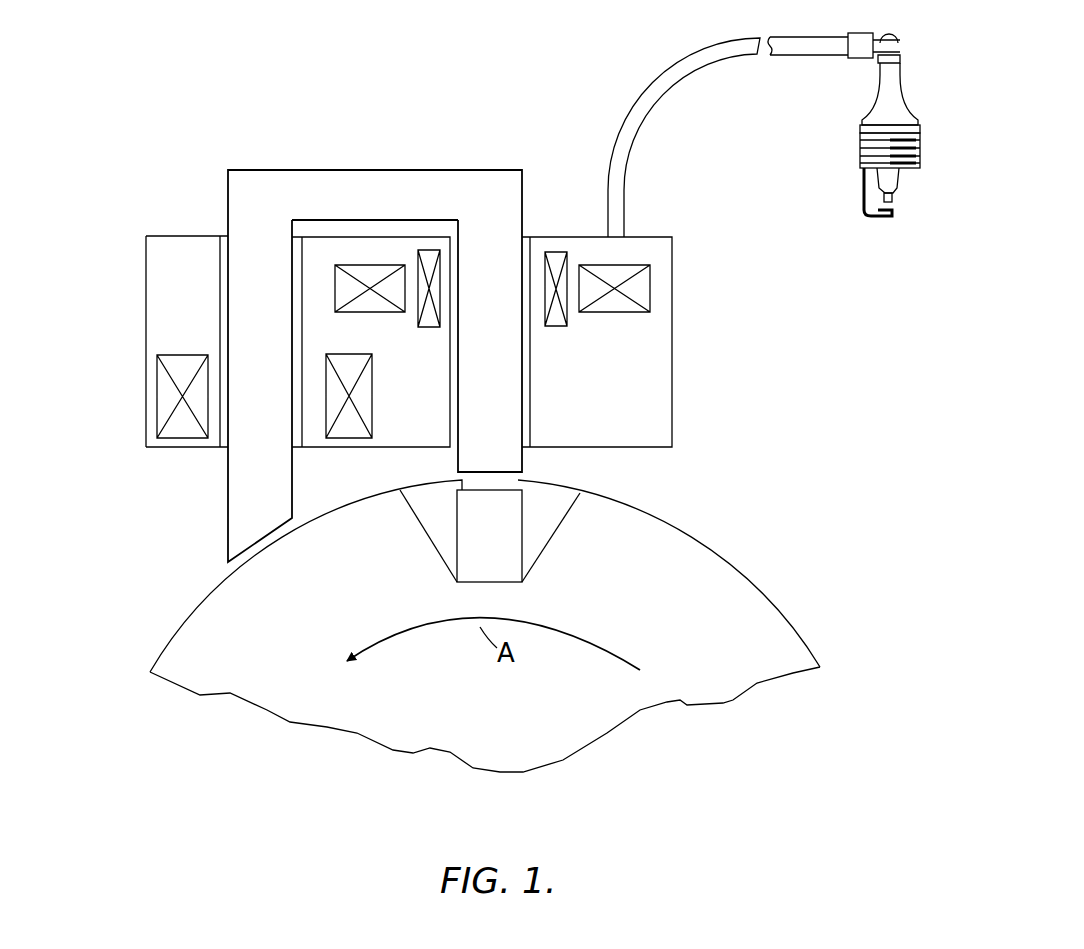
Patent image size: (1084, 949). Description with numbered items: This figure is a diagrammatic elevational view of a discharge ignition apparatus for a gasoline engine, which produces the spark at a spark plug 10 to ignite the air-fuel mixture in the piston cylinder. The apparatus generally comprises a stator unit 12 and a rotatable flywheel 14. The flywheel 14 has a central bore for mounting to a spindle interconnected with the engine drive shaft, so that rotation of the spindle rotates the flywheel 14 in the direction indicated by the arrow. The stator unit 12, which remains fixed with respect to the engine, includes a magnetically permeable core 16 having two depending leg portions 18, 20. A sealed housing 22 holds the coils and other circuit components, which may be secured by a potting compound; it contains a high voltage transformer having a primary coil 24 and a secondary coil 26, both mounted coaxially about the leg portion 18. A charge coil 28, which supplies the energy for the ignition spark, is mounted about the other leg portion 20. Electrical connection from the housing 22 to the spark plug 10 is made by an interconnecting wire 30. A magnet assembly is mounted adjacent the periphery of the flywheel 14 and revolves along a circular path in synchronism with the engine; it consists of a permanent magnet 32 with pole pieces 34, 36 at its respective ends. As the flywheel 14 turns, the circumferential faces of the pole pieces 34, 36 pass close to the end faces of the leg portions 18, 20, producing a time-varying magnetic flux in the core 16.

The spark plug 10 is at (885, 104).
The stator unit 12 is at (407, 125).
The flywheel 14 is at (657, 517).
The magnetically permeable core 16 is at (322, 166).
The leg portion 18 is at (522, 462).
The leg portion 20 is at (228, 492).
The sealed housing 22 is at (672, 357).
The primary coil 24 is at (560, 250).
The secondary coil 26 is at (650, 287).
The charge coil 28 is at (157, 417).
The interconnecting wire 30 is at (727, 43).
The permanent magnet 32 is at (482, 583).
The pole piece 34 is at (548, 508).
The pole piece 36 is at (442, 520).